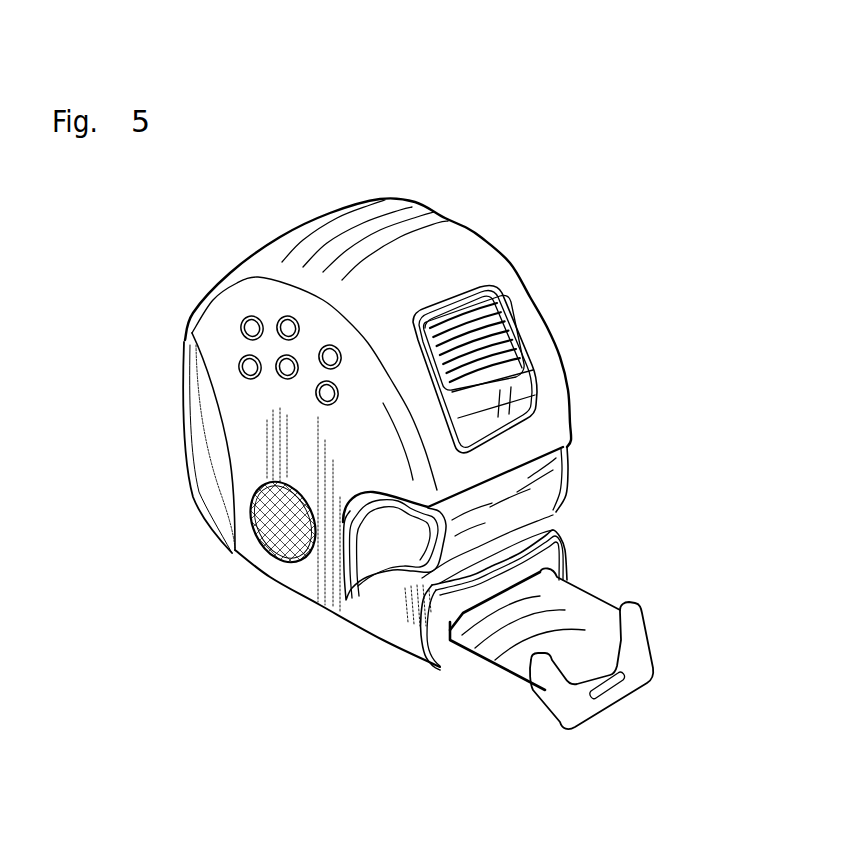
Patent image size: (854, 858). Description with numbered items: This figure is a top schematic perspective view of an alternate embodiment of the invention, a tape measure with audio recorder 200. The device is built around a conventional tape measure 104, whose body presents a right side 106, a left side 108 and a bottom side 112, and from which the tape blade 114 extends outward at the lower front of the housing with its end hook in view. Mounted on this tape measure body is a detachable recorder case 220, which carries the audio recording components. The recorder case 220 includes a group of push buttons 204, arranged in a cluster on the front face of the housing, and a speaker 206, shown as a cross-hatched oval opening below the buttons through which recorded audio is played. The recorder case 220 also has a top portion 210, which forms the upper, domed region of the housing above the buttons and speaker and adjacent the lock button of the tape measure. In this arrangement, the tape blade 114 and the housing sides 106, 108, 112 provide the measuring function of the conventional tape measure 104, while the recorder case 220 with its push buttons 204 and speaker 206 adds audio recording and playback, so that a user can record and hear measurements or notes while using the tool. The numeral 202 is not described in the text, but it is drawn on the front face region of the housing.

The tape measure with audio recorder 200 is at (350, 128).
The front face of housing 202 is at (213, 323).
The push buttons 204 is at (249, 325).
The speaker 206 is at (277, 524).
The top portion 210 is at (420, 233).
The detachable recorder case 220 is at (477, 252).
The right side 106 is at (567, 451).
The conventional tape measure 104 is at (522, 489).
The left side 108 is at (420, 553).
The bottom side 112 is at (453, 668).
The tape blade 114 is at (560, 587).